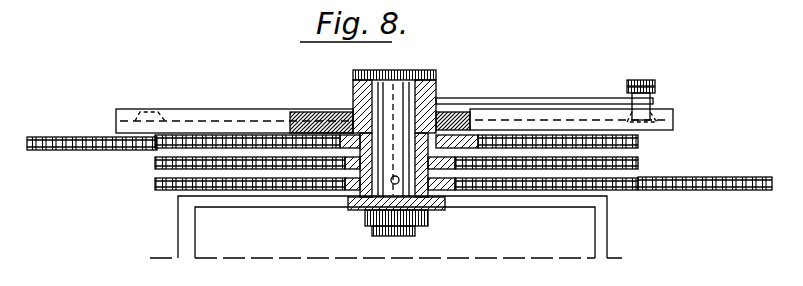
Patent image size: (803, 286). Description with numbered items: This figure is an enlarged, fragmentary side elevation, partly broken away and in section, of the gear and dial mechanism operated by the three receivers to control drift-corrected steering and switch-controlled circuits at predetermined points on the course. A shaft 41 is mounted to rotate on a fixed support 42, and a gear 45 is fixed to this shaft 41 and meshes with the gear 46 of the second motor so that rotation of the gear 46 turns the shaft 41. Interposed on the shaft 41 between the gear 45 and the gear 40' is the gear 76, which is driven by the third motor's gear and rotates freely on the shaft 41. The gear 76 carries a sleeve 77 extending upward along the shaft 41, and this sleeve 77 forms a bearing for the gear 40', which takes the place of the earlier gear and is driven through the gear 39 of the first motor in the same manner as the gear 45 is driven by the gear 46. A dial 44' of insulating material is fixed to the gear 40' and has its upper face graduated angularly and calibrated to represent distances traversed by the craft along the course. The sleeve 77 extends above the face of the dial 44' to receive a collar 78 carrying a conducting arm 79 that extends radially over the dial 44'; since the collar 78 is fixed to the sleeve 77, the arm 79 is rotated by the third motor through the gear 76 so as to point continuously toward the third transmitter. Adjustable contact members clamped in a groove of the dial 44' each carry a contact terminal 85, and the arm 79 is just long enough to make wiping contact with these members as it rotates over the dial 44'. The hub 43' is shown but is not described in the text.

The gear 39 is at (118, 150).
The gear 40' is at (586, 142).
The shaft 41 is at (407, 233).
The fixed support 42 is at (305, 208).
The hub 43' is at (404, 121).
The dial 44' is at (421, 109).
The gear 45 is at (612, 191).
The gear 46 is at (708, 190).
The gear 76 is at (640, 161).
The sleeve 77 is at (368, 101).
The collar 78 is at (436, 98).
The arm 79 is at (485, 106).
The contact terminal 85 is at (627, 94).